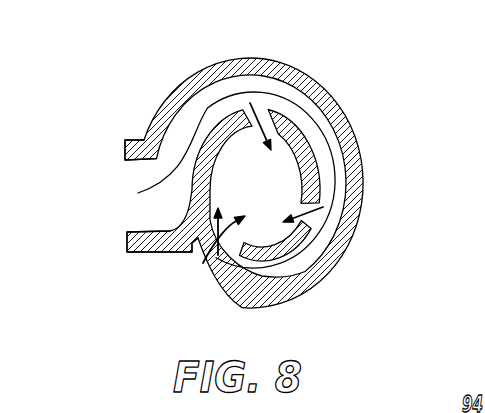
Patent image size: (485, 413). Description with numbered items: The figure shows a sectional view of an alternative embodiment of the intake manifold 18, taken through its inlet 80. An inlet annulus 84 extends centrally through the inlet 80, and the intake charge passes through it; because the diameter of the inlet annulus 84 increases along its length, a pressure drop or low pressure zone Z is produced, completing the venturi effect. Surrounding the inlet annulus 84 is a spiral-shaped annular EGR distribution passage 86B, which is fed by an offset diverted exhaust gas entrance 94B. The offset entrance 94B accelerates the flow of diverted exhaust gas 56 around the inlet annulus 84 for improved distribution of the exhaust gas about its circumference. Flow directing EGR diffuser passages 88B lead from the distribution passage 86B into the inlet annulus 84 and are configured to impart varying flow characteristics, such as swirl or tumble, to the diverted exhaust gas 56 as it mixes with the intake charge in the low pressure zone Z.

The intake manifold 18 is at (358, 272).
The diverted exhaust gas 56 is at (185, 153).
The offset diverted exhaust gas entrance 94B is at (147, 233).
The inlet annulus 84 is at (312, 178).
The inlet 80 is at (283, 172).
The spiral-shaped annular EGR distribution passage 86B is at (268, 132).
The flow directing EGR diffuser passages 88B is at (323, 207).
The low pressure zone Z is at (217, 252).